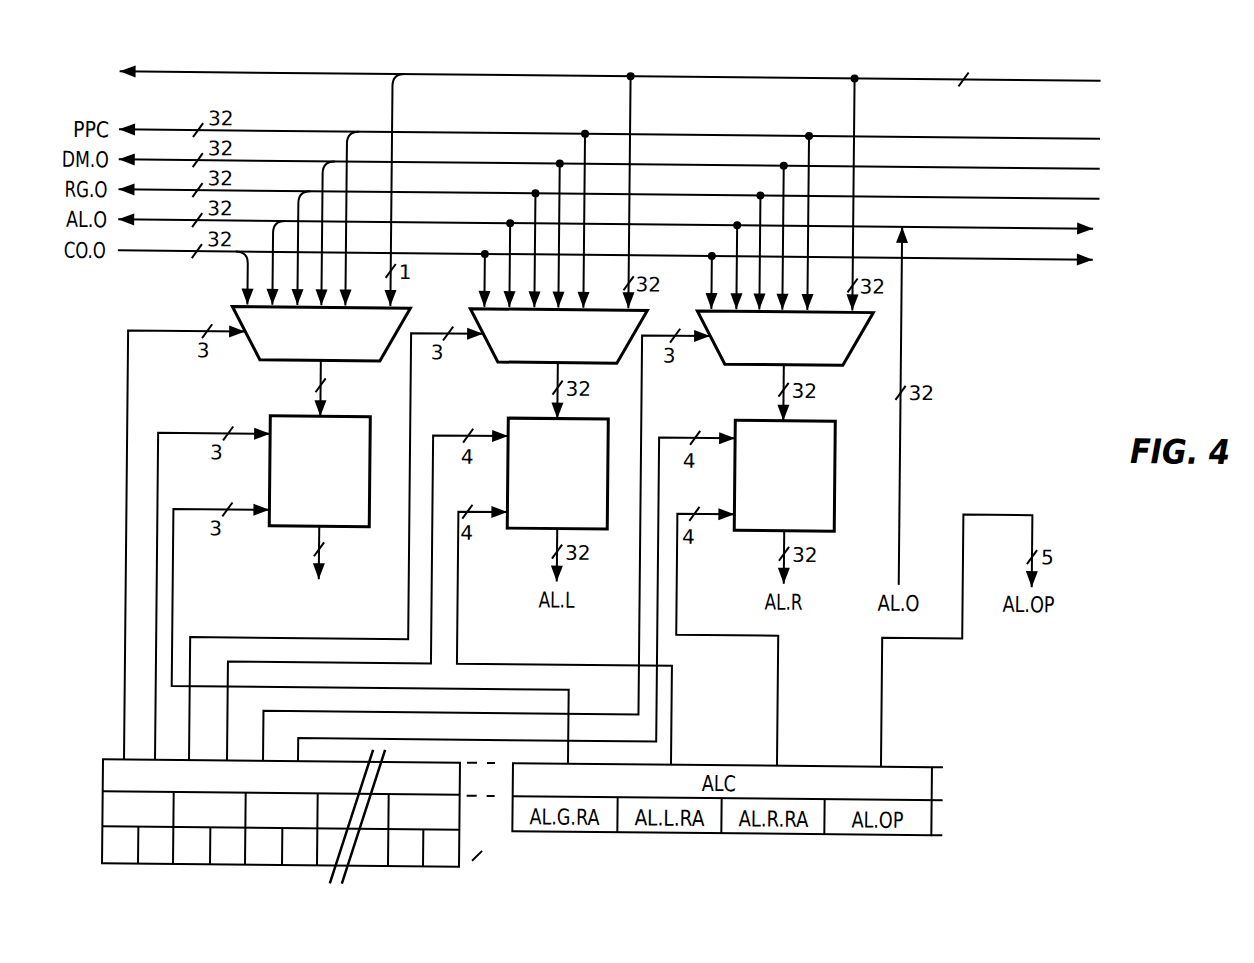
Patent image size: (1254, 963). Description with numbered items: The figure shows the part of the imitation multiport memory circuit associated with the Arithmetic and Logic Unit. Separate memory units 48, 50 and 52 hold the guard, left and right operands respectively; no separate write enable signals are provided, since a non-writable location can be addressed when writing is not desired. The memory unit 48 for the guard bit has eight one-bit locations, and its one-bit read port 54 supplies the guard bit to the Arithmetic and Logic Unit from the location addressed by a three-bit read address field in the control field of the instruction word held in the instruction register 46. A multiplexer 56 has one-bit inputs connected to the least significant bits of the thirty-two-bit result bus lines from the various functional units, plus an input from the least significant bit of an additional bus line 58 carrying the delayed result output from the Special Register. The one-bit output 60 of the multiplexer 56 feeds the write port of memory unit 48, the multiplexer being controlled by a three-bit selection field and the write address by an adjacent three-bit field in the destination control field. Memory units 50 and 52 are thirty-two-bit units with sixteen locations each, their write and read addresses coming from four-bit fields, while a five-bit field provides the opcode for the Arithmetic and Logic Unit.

The instruction register 46 is at (106, 780).
The memory unit 48 is at (371, 431).
The memory unit 50 is at (527, 418).
The memory unit 52 is at (835, 438).
The read port 54 is at (316, 536).
The multiplexer 56 is at (231, 311).
The bus line 58 is at (307, 76).
The output 60 is at (314, 374).